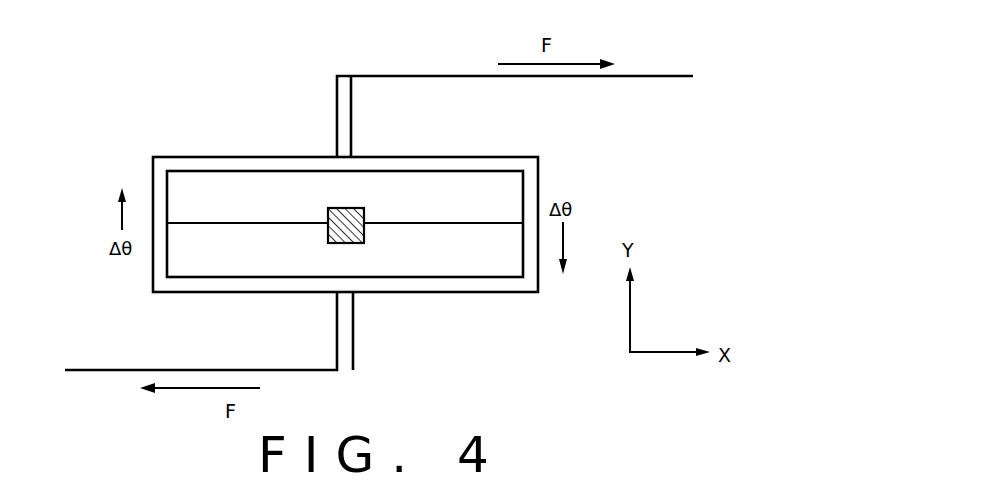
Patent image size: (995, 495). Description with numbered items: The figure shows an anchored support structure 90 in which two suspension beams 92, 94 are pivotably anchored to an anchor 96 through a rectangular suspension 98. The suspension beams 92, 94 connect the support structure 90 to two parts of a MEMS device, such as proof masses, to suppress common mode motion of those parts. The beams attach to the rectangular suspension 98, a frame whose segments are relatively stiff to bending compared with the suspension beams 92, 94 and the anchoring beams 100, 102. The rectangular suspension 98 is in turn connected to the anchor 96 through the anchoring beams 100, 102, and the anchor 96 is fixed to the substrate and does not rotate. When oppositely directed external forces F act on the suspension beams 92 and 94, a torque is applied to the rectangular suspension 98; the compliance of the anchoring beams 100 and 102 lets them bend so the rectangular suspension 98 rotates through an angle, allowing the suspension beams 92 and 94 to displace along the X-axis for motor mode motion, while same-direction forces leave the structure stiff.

The anchored support structure 90 is at (379, 241).
The suspension beam 92 is at (540, 77).
The suspension beam 94 is at (289, 371).
The anchor 96 is at (350, 208).
The rectangular suspension 98 is at (474, 292).
The anchoring beam 100 is at (217, 224).
The anchoring beam 102 is at (418, 224).